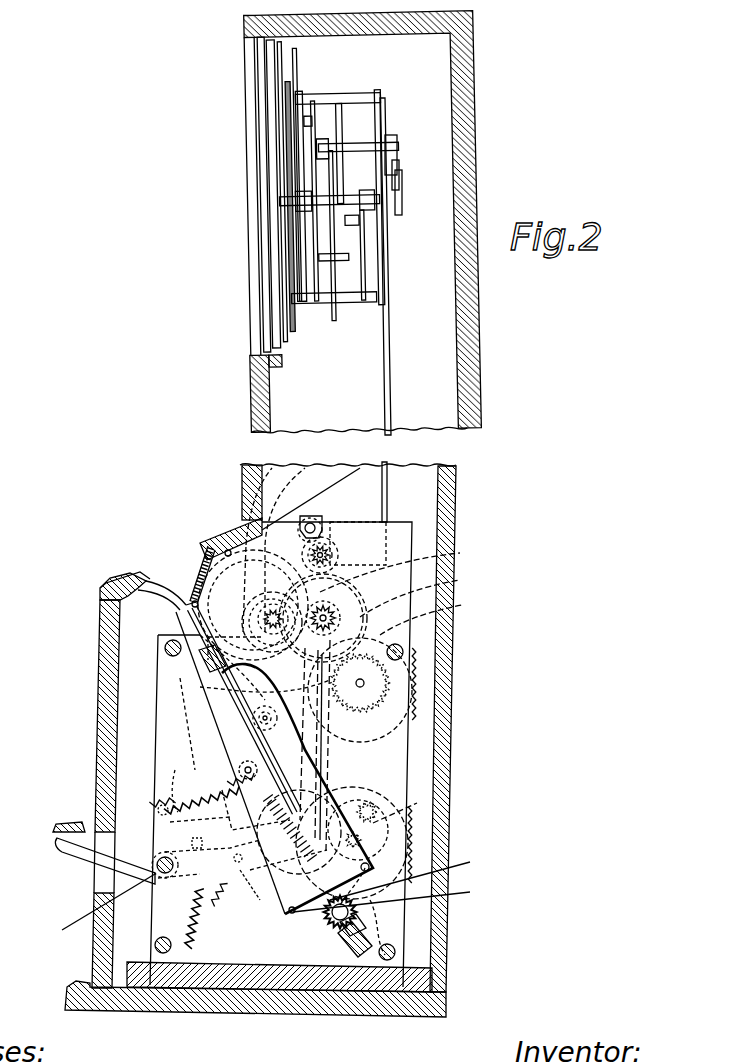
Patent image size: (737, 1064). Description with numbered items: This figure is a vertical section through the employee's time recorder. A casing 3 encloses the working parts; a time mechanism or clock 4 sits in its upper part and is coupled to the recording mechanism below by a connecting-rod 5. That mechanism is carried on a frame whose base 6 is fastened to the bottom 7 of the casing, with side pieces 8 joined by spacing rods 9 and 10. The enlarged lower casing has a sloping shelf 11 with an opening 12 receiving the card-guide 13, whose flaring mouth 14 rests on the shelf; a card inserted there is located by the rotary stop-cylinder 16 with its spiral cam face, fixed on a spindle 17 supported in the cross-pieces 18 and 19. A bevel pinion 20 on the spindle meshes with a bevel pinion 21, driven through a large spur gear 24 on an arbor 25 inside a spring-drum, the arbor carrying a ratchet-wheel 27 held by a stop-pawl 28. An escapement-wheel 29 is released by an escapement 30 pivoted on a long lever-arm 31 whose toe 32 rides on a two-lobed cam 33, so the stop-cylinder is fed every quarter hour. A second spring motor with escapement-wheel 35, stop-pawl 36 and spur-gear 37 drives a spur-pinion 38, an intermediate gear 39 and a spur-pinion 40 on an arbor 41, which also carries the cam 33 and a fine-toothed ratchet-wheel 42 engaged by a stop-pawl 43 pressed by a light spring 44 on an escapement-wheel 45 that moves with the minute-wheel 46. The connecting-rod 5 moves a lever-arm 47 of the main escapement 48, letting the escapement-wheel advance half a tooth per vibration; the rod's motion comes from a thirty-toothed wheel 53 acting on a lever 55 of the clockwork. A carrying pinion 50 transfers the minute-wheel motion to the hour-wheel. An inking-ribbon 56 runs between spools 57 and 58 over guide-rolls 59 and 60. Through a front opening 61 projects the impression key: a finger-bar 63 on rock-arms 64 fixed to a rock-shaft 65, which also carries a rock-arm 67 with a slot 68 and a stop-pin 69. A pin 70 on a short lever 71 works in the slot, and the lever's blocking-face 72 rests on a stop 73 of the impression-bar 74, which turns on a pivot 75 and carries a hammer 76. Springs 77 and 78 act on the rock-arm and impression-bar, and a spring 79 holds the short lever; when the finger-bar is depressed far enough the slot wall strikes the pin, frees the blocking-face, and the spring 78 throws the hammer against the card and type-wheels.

The casing 3 is at (448, 640).
The time mechanism 4 is at (339, 190).
The connecting-rod 5 is at (392, 356).
The base 6 is at (370, 1003).
The bottom 7 is at (403, 1003).
The side pieces 8 is at (352, 745).
The rod or spacing member 9 is at (165, 648).
The rod or spacing member 10 is at (452, 952).
The sloping portion or shelf 11 is at (212, 520).
The opening 12 is at (125, 592).
The card-guide 13 is at (200, 622).
The flaring mouth 14 is at (190, 535).
The stop-cylinder 16 is at (299, 817).
The shaft or spindle 17 is at (290, 905).
The cross-piece 18 is at (340, 946).
The cross-piece 19 is at (198, 658).
The beveled gear or pinion 20 is at (395, 904).
The beveled gear or pinion 21 is at (413, 876).
The spur gear 24 is at (413, 830).
The arbor 25 is at (417, 803).
The ratchet-wheel 27 is at (373, 882).
The stop-pawl 28 is at (365, 807).
The escapement-wheel 29 is at (405, 922).
The escapement 30 is at (262, 898).
The lever-arm 31 is at (324, 760).
The toe 32 is at (338, 606).
The cam 33 is at (245, 707).
The escapement-wheel 35 is at (360, 705).
The stop-pawl 36 is at (398, 667).
The spur-gear 37 is at (418, 694).
The spur-pinion 38 is at (424, 591).
The intermediate gear 39 is at (404, 566).
The spur-pinion 40 is at (272, 622).
The arbor 41 is at (273, 609).
The ratchet-wheel 42 is at (266, 551).
The stop-pawl 43 is at (296, 551).
The light spring 44 is at (295, 492).
The escapement-wheel 45 is at (253, 605).
The minute-wheel 46 is at (339, 546).
The lever-arm 47 is at (378, 548).
The escapement 48 is at (325, 518).
The carrying pinion 50 is at (327, 548).
The toothed-wheel 53 is at (400, 200).
The lever 55 is at (385, 145).
The inking-ribbon 56 is at (267, 492).
The spool 57 is at (319, 488).
The spool 58 is at (232, 724).
The guide-roll 59 is at (197, 545).
The guide-roll 60 is at (182, 596).
The opening 61 is at (100, 882).
The finger-bar 63 is at (65, 823).
The rock-arms 64 is at (70, 848).
The rock-shaft 65 is at (100, 908).
The rock-arm 67 is at (175, 880).
The slot 68 is at (195, 838).
The stop or pin 69 is at (230, 880).
The pin 70 is at (220, 800).
The short lever 71 is at (170, 822).
The blocking face 72 is at (268, 830).
The stop 73 is at (272, 735).
The impression-bar 74 is at (238, 764).
The pivot 75 is at (234, 777).
The hammer 76 is at (220, 672).
The spring 77 is at (200, 940).
The spring 78 is at (162, 805).
The spring 79 is at (173, 778).